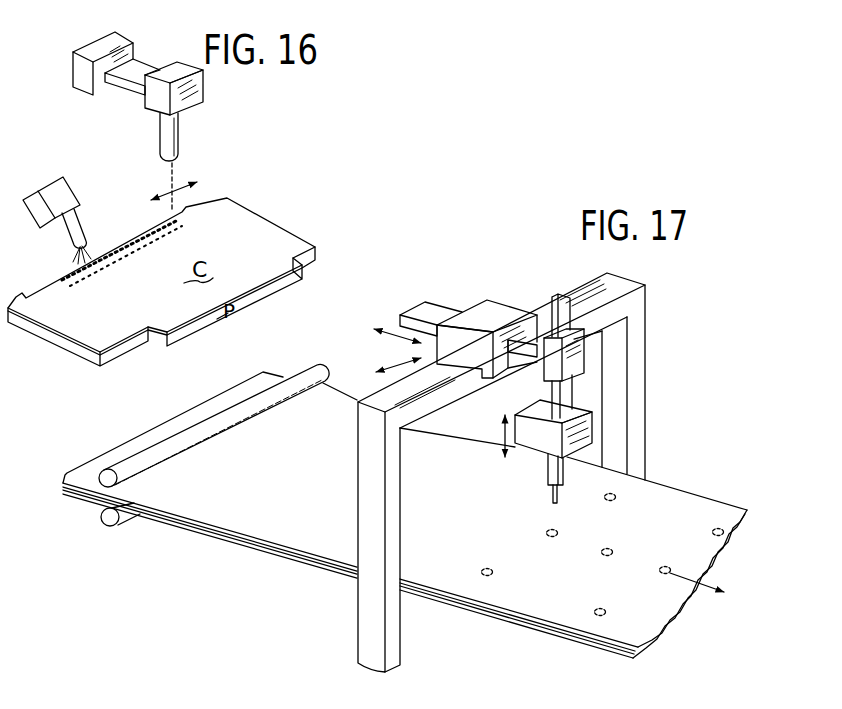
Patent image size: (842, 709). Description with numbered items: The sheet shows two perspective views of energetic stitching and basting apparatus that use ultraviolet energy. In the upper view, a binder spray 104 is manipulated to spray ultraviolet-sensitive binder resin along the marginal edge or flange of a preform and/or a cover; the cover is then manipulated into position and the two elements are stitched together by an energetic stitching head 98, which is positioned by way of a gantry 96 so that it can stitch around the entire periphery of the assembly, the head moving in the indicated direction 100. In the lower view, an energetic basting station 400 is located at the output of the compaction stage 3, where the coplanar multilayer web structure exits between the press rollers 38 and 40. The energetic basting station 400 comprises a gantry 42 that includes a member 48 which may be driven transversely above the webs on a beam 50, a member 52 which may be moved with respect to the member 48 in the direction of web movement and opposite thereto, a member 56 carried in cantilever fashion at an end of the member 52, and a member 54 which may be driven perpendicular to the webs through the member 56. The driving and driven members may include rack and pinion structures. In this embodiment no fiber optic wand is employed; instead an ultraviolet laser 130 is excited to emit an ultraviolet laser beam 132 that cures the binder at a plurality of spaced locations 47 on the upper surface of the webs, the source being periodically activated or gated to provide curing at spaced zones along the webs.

In FIG. 16, the gantry 96 is at (167, 61).
In FIG. 16, the energetic stitching head 98 is at (160, 128).
In FIG. 16, the direction of movement 100 is at (170, 189).
In FIG. 16, the binder spray 104 is at (65, 192).
In FIG. 17, the compaction stage 3 is at (190, 406).
In FIG. 17, the press roller 38 is at (100, 473).
In FIG. 17, the press roller 40 is at (107, 525).
In FIG. 17, the gantry 42 is at (495, 299).
In FIG. 17, the member 48 is at (473, 304).
In FIG. 17, the beam 50 is at (419, 405).
In FIG. 17, the member 52 is at (537, 341).
In FIG. 17, the member 54 is at (557, 294).
In FIG. 17, the member 56 is at (577, 359).
In FIG. 17, the ultraviolet laser 130 is at (542, 441).
In FIG. 17, the ultraviolet laser beam 132 is at (560, 489).
In FIG. 17, the spaced locations 47 is at (601, 553).
In FIG. 17, the energetic basting station 400 is at (582, 281).